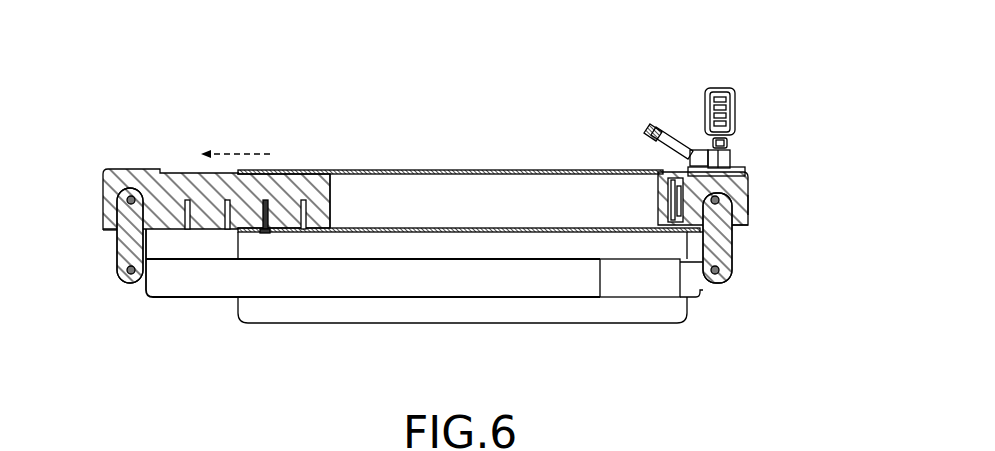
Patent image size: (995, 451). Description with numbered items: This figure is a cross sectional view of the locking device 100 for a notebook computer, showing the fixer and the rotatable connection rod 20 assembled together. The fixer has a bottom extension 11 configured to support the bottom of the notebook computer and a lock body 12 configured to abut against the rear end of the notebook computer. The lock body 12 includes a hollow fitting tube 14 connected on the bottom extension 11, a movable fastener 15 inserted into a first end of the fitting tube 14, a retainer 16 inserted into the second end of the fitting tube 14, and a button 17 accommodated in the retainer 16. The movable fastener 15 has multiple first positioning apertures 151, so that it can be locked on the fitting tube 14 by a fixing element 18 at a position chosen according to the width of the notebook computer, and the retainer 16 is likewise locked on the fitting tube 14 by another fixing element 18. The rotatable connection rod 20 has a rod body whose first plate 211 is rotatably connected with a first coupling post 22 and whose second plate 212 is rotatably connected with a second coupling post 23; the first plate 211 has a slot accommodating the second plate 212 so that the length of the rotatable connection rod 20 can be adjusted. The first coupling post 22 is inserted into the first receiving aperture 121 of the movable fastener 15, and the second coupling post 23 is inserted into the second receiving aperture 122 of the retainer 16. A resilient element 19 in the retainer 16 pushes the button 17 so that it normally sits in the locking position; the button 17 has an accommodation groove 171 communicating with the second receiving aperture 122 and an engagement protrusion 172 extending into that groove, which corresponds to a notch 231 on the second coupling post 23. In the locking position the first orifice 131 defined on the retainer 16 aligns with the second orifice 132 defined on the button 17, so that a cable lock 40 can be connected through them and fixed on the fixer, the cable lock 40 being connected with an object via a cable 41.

The locking device 100 is at (190, 69).
The bottom extension 11 is at (512, 312).
The lock body 12 is at (195, 163).
The fitting tube 14 is at (437, 170).
The movable fastener 15 is at (288, 183).
The first positioning apertures 151 is at (267, 202).
The retainer 16 is at (746, 182).
The button 17 is at (752, 180).
The accommodation groove 171 is at (748, 206).
The engagement protrusion 172 is at (733, 237).
The fixing element 18 is at (265, 233).
The resilient element 19 is at (660, 172).
The rotatable connection rod 20 is at (616, 303).
The first plate 211 is at (360, 282).
The second plate 212 is at (657, 282).
The first coupling post 22 is at (130, 248).
The second coupling post 23 is at (732, 258).
The notch 231 is at (633, 192).
The first receiving aperture 121 is at (117, 227).
The second receiving aperture 122 is at (745, 227).
The first orifice 131 is at (692, 152).
The second orifice 132 is at (733, 168).
The cable lock 40 is at (720, 90).
The cable 41 is at (654, 130).